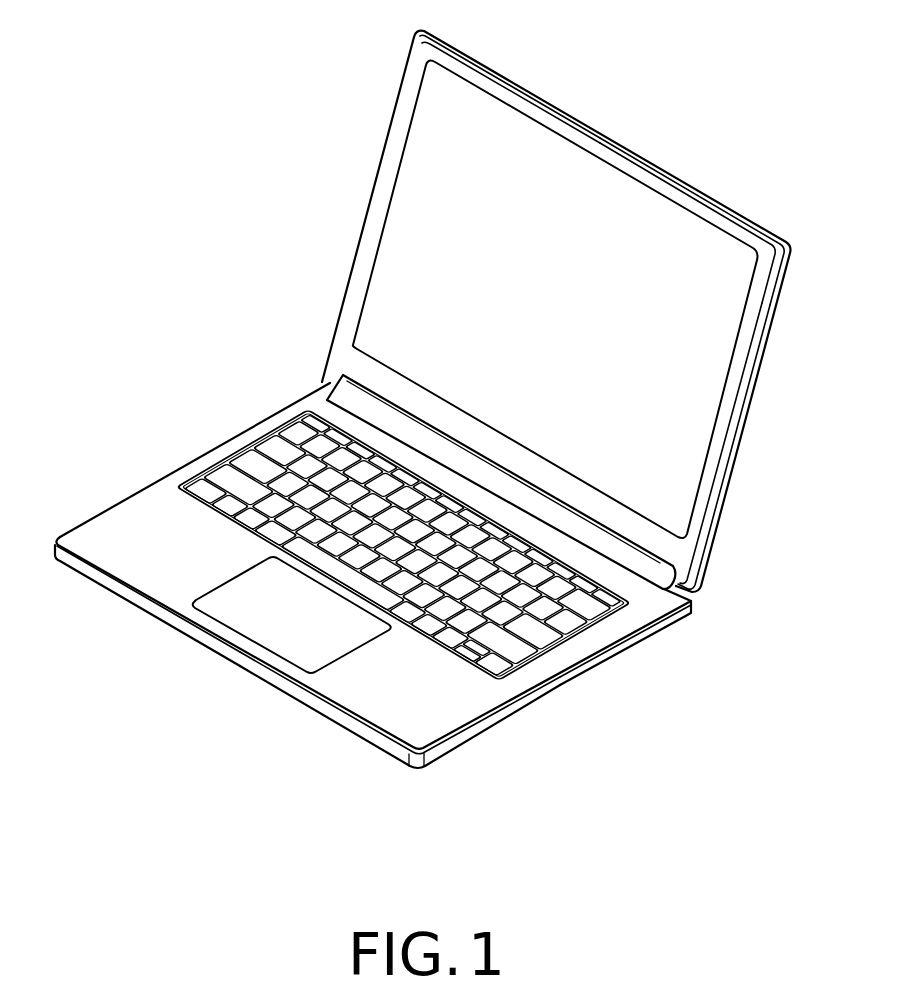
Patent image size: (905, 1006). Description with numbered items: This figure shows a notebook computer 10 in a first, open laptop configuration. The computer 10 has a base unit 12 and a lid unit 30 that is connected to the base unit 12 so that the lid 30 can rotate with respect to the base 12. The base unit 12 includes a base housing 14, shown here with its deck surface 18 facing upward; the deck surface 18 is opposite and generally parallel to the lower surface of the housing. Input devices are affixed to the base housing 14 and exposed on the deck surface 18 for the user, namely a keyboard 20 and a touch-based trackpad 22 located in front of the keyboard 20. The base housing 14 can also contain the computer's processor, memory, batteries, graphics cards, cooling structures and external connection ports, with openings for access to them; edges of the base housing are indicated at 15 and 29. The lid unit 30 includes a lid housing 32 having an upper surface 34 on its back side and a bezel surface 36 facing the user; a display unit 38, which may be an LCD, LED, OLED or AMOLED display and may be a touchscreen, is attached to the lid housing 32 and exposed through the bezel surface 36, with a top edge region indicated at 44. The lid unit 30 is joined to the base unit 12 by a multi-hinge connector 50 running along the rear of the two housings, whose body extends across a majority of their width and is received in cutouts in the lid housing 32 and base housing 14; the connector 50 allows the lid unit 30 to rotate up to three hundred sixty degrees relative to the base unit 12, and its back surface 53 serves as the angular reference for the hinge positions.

The notebook computer 10 is at (146, 192).
The base unit 12 is at (100, 479).
The base housing 14 is at (463, 737).
The side edge of base 15 is at (573, 704).
The deck surface 18 is at (392, 687).
The keyboard 20 is at (560, 613).
The trackpad 22 is at (264, 611).
The left side edge of base 29 is at (152, 606).
The lid unit 30 is at (382, 66).
The lid housing 32 is at (790, 262).
The upper surface 34 is at (778, 373).
The bezel surface 36 is at (375, 214).
The display unit 38 is at (532, 274).
The top edge of display housing 44 is at (665, 161).
The multi-hinge connector 50 is at (652, 572).
The back surface 53 is at (362, 405).